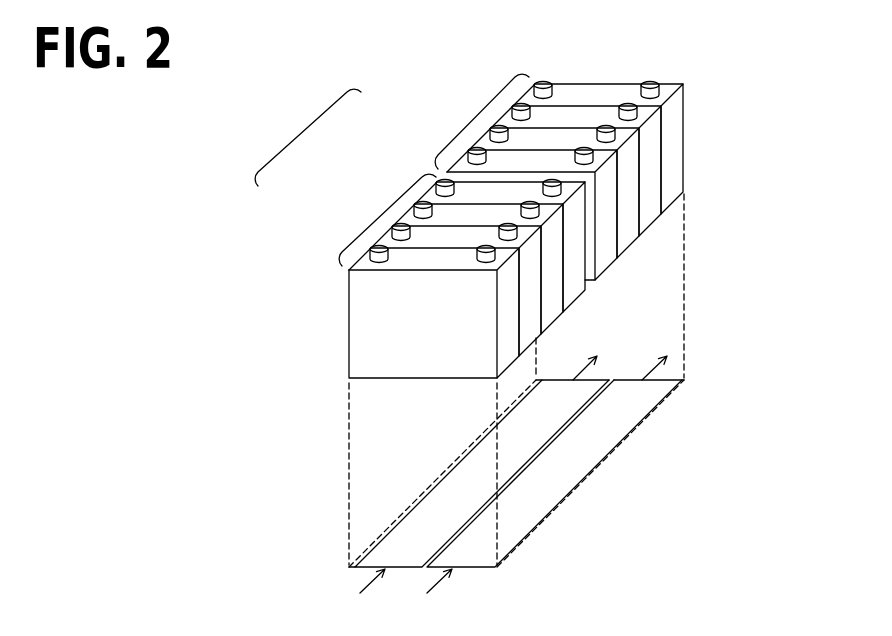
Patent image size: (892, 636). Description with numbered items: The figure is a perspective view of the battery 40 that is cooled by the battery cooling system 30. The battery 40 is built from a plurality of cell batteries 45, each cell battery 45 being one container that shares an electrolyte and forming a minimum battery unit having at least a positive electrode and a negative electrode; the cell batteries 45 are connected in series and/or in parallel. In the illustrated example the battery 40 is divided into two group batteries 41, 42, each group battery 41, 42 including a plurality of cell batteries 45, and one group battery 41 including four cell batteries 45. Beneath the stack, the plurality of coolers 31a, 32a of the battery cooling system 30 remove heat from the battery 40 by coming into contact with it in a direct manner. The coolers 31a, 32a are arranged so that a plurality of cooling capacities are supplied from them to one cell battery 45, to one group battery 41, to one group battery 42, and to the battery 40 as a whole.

The battery cooling system 30 is at (568, 393).
The cooler 31a is at (515, 455).
The cooler 32a is at (673, 385).
The battery 40 is at (435, 226).
The group battery 41 is at (425, 276).
The group battery 42 is at (440, 132).
The cell battery 45 is at (349, 320).